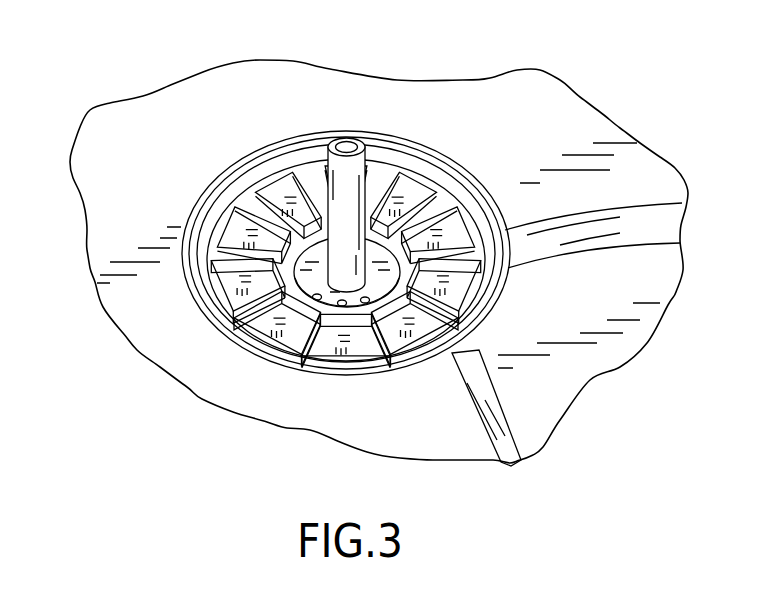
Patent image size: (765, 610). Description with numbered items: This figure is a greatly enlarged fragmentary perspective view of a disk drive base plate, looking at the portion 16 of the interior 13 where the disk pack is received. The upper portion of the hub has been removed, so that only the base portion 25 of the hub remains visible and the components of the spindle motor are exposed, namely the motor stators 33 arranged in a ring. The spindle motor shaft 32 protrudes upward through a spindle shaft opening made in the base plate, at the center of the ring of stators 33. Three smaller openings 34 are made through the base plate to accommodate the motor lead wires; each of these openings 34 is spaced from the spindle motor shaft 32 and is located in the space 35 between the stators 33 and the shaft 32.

The interior 13 is at (570, 306).
The portion 16 is at (161, 142).
The base portion 25 is at (487, 310).
The spindle motor shaft 32 is at (357, 165).
The motor stators 33 is at (467, 237).
The openings 34 is at (317, 300).
The space 35 is at (297, 243).